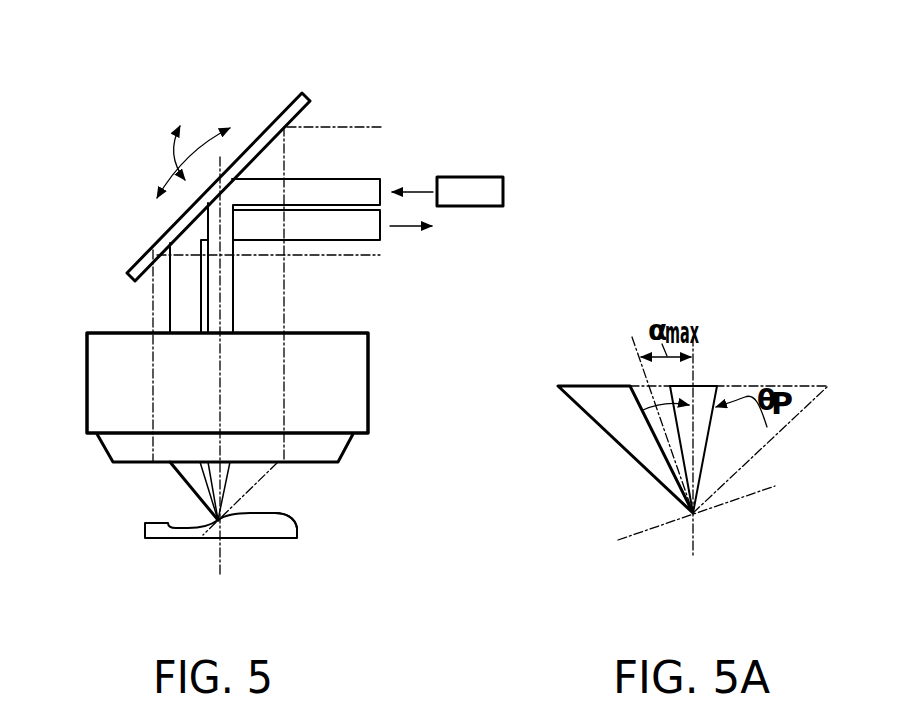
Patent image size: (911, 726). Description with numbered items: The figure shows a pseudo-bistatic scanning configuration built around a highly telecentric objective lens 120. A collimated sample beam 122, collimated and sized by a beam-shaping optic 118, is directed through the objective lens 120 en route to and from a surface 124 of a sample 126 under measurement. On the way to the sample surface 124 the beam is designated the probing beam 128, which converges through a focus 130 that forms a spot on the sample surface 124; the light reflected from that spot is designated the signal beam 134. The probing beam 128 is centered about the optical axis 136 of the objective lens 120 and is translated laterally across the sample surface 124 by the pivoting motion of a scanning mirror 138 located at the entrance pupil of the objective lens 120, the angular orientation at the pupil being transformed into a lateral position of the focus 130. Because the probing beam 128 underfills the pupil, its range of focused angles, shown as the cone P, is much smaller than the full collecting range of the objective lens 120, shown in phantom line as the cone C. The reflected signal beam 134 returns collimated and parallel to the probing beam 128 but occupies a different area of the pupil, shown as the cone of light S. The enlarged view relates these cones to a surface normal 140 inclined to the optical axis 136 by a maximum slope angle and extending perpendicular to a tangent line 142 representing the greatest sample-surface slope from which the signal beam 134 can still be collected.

In FIG. 5, the beam-shaping optic 118 is at (490, 177).
In FIG. 5, the objective lens 120 is at (359, 405).
In FIG. 5, the sample beam 122 is at (407, 192).
In FIG. 5, the sample surface 124 is at (170, 522).
In FIG. 5, the sample 126 is at (297, 528).
In FIG. 5, the probing beam 128 is at (233, 290).
In FIG. 5, the focus 130 is at (214, 531).
In FIG. 5, the signal beam 134 is at (170, 295).
In FIG. 5, the optical axis 136 is at (222, 550).
In FIG. 5A, the optical axis 136 is at (696, 542).
In FIG. 5, the scanning mirror 138 is at (301, 112).
In FIG. 5A, the surface normal 140 is at (633, 340).
In FIG. 5A, the tangent line 142 is at (627, 538).
In FIG. 5, the cone of light S is at (177, 474).
In FIG. 5A, the cone of light S is at (607, 435).
In FIG. 5, the cone P is at (229, 477).
In FIG. 5A, the cone P is at (704, 462).
In FIG. 5, the cone C is at (279, 470).
In FIG. 5A, the cone C is at (791, 422).